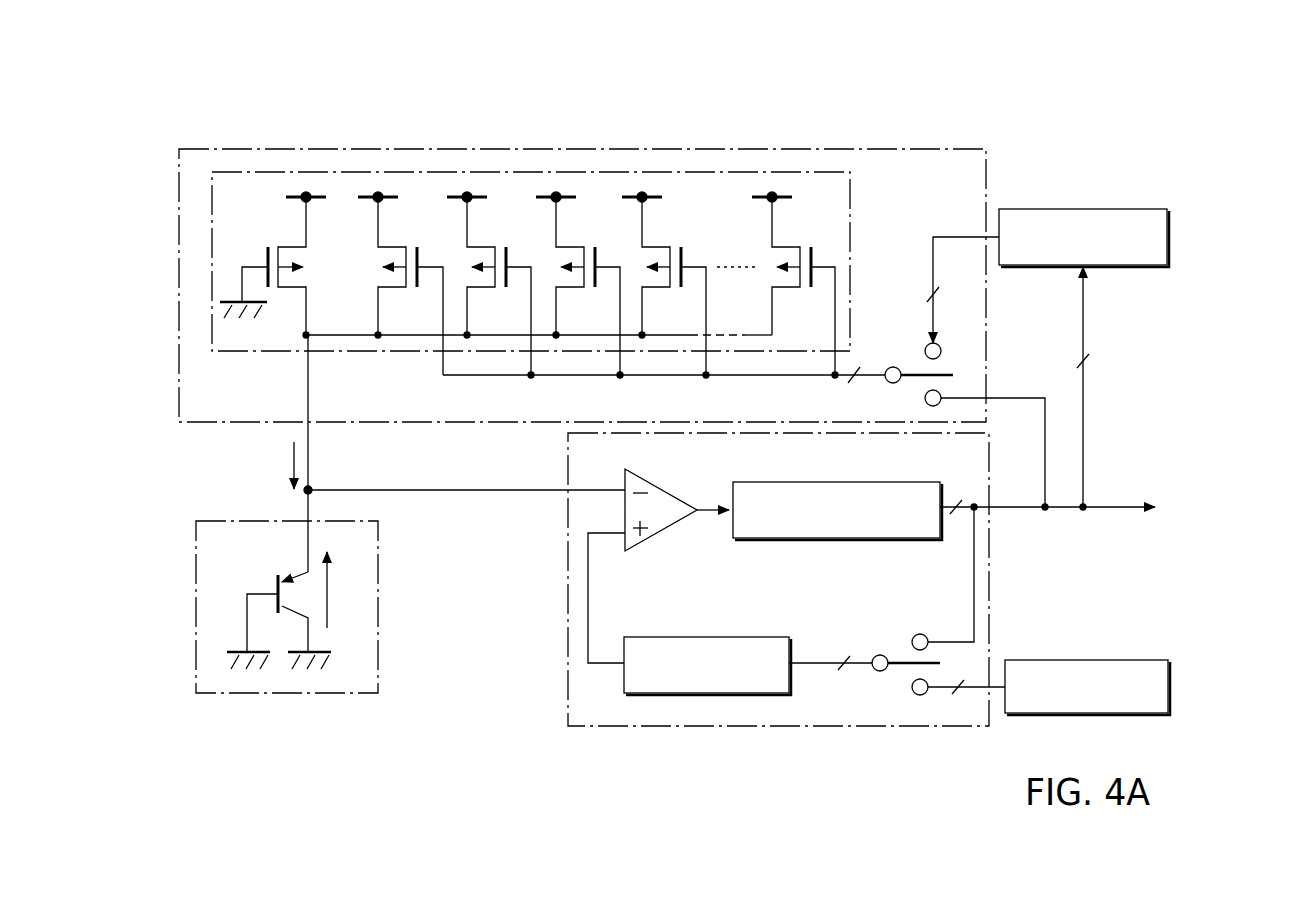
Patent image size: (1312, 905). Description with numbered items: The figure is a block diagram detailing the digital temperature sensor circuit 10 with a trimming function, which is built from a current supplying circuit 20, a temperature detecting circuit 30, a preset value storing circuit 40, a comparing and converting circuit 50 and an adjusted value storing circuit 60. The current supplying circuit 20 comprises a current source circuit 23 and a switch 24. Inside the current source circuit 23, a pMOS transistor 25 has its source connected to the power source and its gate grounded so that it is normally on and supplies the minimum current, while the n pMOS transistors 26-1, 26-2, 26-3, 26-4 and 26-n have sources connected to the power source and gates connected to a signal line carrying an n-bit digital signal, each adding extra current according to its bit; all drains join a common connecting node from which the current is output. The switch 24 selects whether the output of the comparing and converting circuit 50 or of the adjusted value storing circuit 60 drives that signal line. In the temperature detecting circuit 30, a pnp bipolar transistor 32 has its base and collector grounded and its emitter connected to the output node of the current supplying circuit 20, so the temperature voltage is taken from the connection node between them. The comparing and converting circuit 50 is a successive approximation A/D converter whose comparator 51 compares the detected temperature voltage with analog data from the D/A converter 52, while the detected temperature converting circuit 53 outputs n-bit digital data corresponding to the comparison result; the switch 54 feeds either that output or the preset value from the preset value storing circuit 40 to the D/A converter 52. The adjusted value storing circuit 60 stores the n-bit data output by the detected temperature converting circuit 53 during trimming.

The temperature sensor circuit 10 is at (956, 100).
The current supplying circuit 20 is at (577, 148).
The current source circuit 23 is at (853, 236).
The switch 24 is at (922, 353).
The pMOS transistor 25 is at (312, 268).
The pMOS transistor 26-1 is at (384, 240).
The pMOS transistor 26-2 is at (473, 240).
The pMOS transistor 26-3 is at (562, 240).
The pMOS transistor 26-4 is at (648, 240).
The pMOS transistor 26-n is at (778, 240).
The temperature detecting circuit 30 is at (296, 697).
The pnp bipolar transistor 32 is at (283, 572).
The preset value storing circuit 40 is at (1088, 660).
The comparing and converting circuit 50 is at (645, 730).
The comparator 51 is at (666, 491).
The D/A converter 52 is at (709, 637).
The detected temperature converting circuit 53 is at (866, 482).
The switch 54 is at (908, 650).
The adjusted value storing circuit 60 is at (1088, 208).